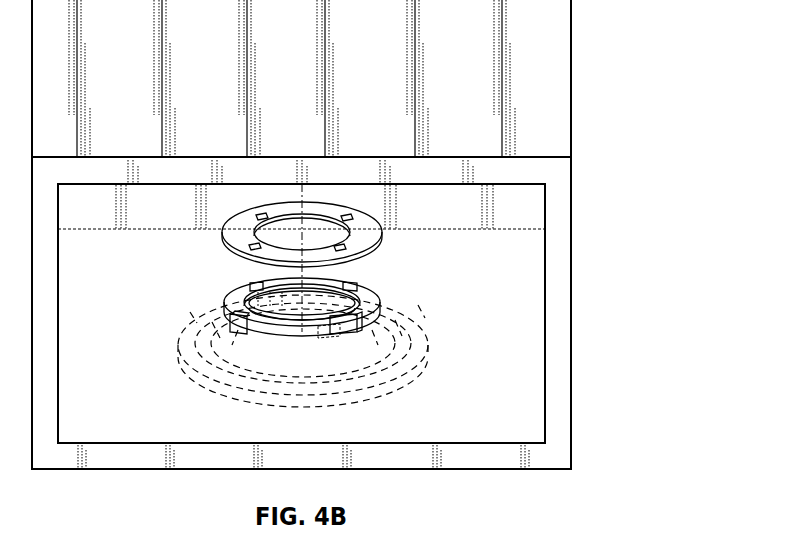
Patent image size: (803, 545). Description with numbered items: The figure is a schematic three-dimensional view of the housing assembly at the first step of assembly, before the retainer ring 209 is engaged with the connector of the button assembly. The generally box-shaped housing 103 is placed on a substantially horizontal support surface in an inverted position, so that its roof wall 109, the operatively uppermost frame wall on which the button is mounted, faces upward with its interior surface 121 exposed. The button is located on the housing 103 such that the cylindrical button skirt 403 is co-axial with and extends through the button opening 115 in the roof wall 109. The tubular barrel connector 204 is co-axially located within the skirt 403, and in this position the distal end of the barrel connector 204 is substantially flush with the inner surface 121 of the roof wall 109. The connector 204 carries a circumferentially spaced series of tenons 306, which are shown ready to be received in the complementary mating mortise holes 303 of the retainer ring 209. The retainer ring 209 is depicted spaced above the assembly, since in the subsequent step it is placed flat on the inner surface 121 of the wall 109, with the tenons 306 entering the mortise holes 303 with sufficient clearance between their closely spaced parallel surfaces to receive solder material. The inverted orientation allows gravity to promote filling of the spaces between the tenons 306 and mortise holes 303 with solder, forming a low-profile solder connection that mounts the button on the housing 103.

The housing 103 is at (558, 277).
The roof wall 109 is at (472, 458).
The interior surface 121 is at (504, 407).
The retainer ring 209 is at (364, 227).
The mortise holes 303 is at (262, 216).
The tenons 306 is at (343, 283).
The button skirt 403 is at (226, 298).
The barrel connector 204 is at (372, 322).
The button opening 115 is at (212, 334).